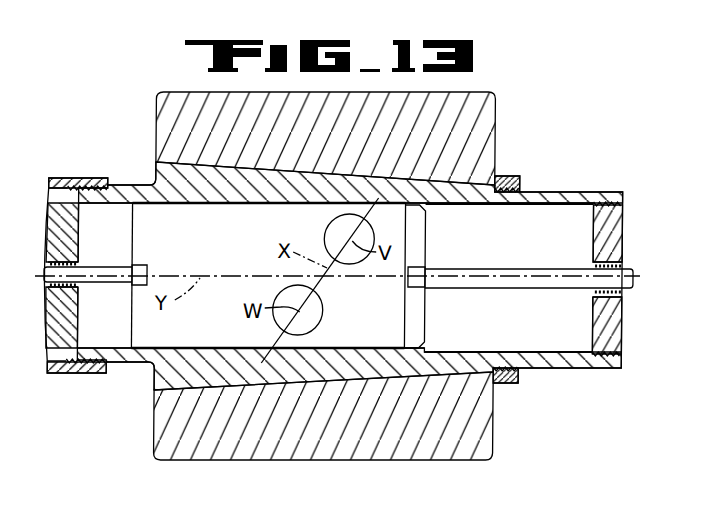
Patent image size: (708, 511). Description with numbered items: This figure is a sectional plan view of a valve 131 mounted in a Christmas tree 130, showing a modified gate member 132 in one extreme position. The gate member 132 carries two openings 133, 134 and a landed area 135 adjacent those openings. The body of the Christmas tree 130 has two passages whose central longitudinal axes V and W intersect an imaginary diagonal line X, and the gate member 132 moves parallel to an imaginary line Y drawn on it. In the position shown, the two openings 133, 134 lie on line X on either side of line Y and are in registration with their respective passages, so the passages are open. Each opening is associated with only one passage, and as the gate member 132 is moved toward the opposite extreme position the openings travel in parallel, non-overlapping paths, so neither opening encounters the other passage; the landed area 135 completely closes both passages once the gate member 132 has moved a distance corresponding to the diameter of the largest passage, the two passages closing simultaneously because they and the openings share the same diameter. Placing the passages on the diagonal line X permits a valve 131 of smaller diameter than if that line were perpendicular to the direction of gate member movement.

The Christmas tree 130 is at (495, 105).
The valve 131 is at (542, 192).
The gate member 132 is at (425, 320).
The opening 133 is at (326, 238).
The opening 134 is at (323, 310).
The landed area 135 is at (223, 266).